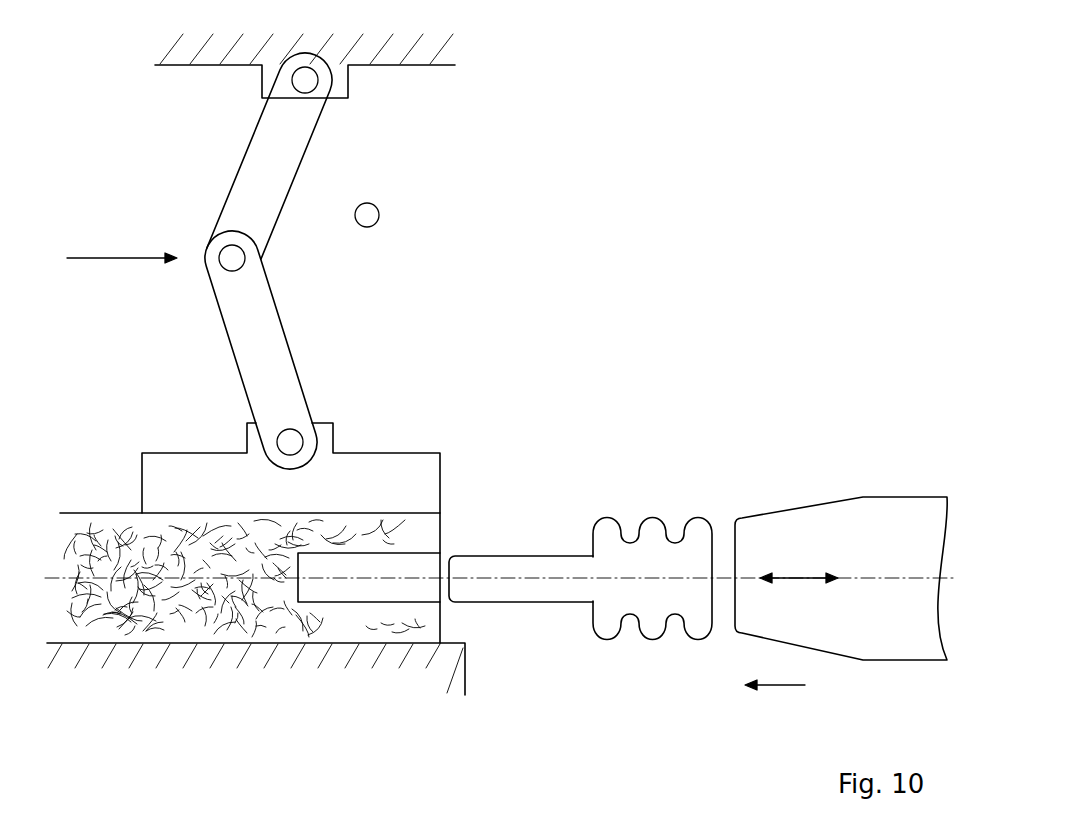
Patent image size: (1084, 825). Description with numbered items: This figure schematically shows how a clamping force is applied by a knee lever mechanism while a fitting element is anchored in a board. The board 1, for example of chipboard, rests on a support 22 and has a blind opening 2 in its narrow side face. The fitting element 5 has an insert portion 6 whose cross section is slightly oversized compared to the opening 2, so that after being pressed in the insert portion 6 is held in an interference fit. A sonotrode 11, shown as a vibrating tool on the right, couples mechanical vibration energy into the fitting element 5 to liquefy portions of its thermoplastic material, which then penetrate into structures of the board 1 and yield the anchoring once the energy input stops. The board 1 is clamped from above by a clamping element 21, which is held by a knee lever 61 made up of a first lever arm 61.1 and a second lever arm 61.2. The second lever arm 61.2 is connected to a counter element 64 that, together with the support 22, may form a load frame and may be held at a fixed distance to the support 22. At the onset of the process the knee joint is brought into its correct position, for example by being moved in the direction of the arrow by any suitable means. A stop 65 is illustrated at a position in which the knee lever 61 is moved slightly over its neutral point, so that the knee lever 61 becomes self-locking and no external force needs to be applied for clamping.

The board 1 is at (109, 540).
The blind opening 2 is at (365, 591).
The fitting element 5 is at (657, 500).
The insert portion 6 is at (535, 565).
The sonotrode 11 is at (805, 543).
The clamping element 21 is at (410, 472).
The support 22 is at (276, 693).
The knee lever 61 is at (288, 261).
The first lever arm 61.1 is at (257, 342).
The second lever arm 61.2 is at (268, 172).
The counter element 64 is at (437, 52).
The stop 65 is at (374, 214).